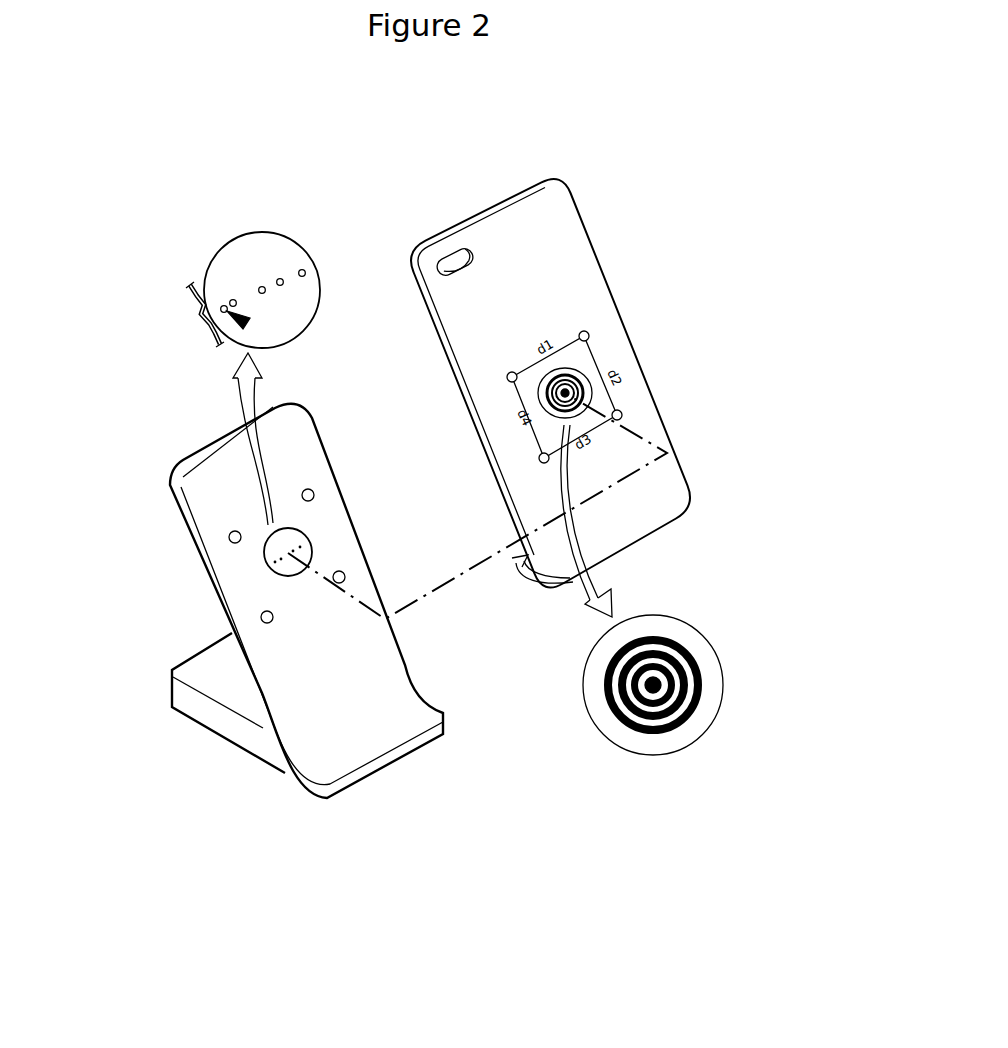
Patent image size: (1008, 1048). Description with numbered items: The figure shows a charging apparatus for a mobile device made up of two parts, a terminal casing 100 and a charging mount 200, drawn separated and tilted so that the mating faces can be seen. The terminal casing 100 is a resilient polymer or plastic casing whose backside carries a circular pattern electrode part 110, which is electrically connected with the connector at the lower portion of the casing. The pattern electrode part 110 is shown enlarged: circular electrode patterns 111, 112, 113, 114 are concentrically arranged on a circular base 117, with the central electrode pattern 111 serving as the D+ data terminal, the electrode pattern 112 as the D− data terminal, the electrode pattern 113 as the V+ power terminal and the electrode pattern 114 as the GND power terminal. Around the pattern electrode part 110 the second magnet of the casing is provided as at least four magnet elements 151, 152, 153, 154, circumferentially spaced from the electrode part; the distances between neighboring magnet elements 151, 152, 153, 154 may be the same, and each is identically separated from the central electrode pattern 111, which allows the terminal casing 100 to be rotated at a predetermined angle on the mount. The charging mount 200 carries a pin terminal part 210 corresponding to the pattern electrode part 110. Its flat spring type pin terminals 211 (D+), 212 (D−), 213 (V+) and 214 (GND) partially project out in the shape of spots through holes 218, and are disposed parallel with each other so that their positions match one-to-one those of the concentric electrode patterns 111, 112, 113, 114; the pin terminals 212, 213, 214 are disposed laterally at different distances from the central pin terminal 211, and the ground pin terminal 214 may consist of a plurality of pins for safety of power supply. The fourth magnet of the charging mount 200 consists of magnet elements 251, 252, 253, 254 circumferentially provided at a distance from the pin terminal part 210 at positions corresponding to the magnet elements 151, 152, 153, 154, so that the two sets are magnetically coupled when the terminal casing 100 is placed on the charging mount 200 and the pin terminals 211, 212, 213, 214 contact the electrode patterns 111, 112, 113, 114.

The terminal casing 100 is at (718, 465).
The pattern electrode part 110 is at (612, 362).
The electrode pattern 111 is at (640, 685).
The electrode pattern 112 is at (613, 710).
The electrode pattern 113 is at (640, 723).
The electrode pattern 114 is at (667, 733).
The circular base 117 is at (720, 693).
The magnet element 151 is at (589, 333).
The magnet element 152 is at (507, 377).
The magnet element 153 is at (622, 412).
The magnet element 154 is at (540, 458).
The charging mount 200 is at (212, 405).
The pin terminal part 210 is at (250, 563).
The pin terminal 211 is at (261, 287).
The pin terminal 212 is at (280, 279).
The pin terminal 213 is at (232, 300).
The pin terminal 214 is at (302, 270).
The hole 218 is at (244, 323).
The magnet element 251 is at (229, 536).
The magnet element 252 is at (300, 490).
The magnet element 253 is at (261, 616).
The magnet element 254 is at (336, 583).